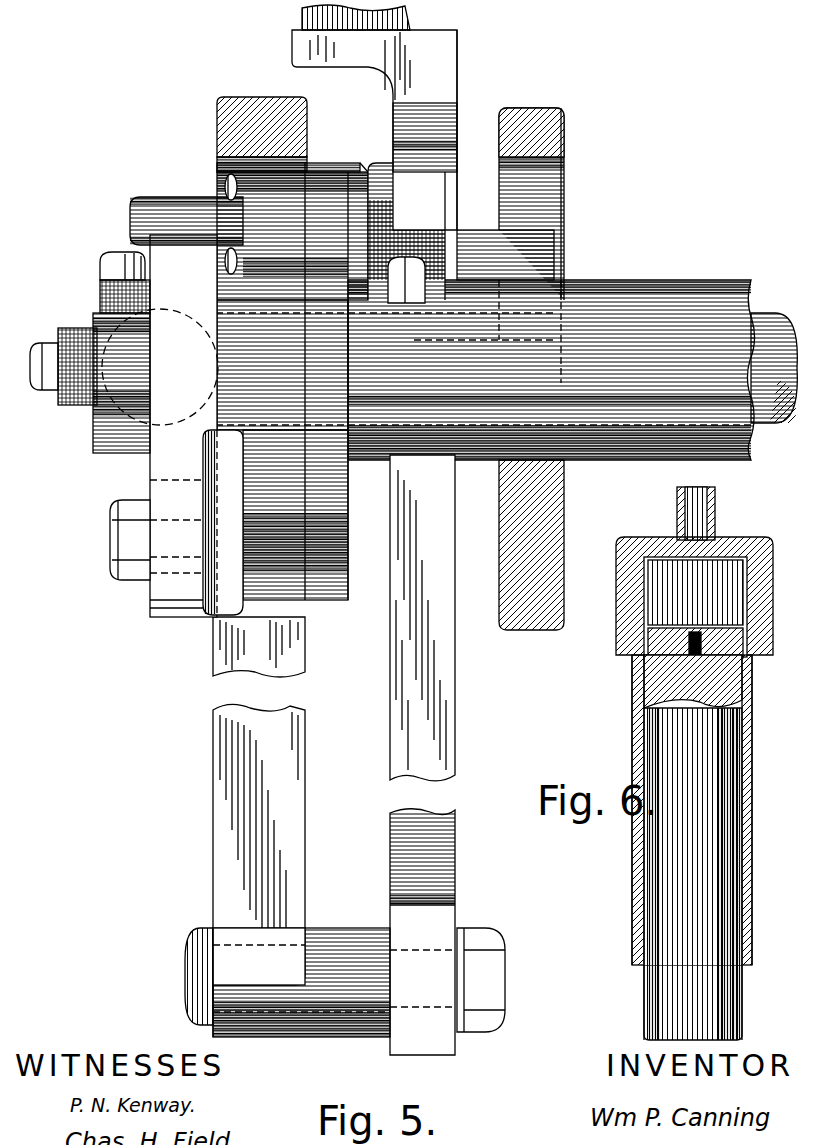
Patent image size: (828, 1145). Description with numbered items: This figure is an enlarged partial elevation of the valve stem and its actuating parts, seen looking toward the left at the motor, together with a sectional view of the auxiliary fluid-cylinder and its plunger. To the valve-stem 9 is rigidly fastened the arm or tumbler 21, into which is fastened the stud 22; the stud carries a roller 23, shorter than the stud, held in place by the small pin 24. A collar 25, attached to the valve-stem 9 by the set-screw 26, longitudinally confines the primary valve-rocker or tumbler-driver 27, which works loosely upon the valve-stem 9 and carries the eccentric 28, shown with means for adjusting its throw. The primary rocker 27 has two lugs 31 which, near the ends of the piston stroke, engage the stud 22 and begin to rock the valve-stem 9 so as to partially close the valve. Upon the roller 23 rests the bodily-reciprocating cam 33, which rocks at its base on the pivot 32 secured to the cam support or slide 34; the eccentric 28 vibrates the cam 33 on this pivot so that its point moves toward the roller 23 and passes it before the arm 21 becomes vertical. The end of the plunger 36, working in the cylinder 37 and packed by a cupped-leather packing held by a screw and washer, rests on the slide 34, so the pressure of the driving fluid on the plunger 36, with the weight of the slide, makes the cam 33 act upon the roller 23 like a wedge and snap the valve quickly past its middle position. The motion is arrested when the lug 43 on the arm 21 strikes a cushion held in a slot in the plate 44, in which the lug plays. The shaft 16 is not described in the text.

In FIG. 5, the valve-stem 9 is at (795, 412).
In FIG. 5, the main shaft 16 is at (751, 455).
In FIG. 5, the arm or tumbler 21 is at (457, 183).
In FIG. 5, the stud 22 is at (130, 218).
In FIG. 5, the roller 23 is at (325, 172).
In FIG. 5, the small pin 24 is at (224, 185).
In FIG. 5, the collar 25 is at (100, 445).
In FIG. 5, the set-screw 26 is at (100, 268).
In FIG. 5, the primary valve-rocker or tumbler-driver 27 is at (150, 588).
In FIG. 5, the eccentric 28 is at (350, 478).
In FIG. 5, the lugs 31 is at (171, 426).
In FIG. 5, the pivot 32 is at (186, 975).
In FIG. 5, the bodily-reciprocating cam 33 is at (307, 112).
In FIG. 5, the cam support or slide 34 is at (457, 53).
In FIG. 5, the plunger 36 is at (410, 14).
In FIG. 6, the plunger 36 is at (745, 985).
In FIG. 6, the cylinder 37 is at (752, 862).
In FIG. 5, the lug 43 is at (554, 258).
In FIG. 5, the plate 44 is at (564, 173).